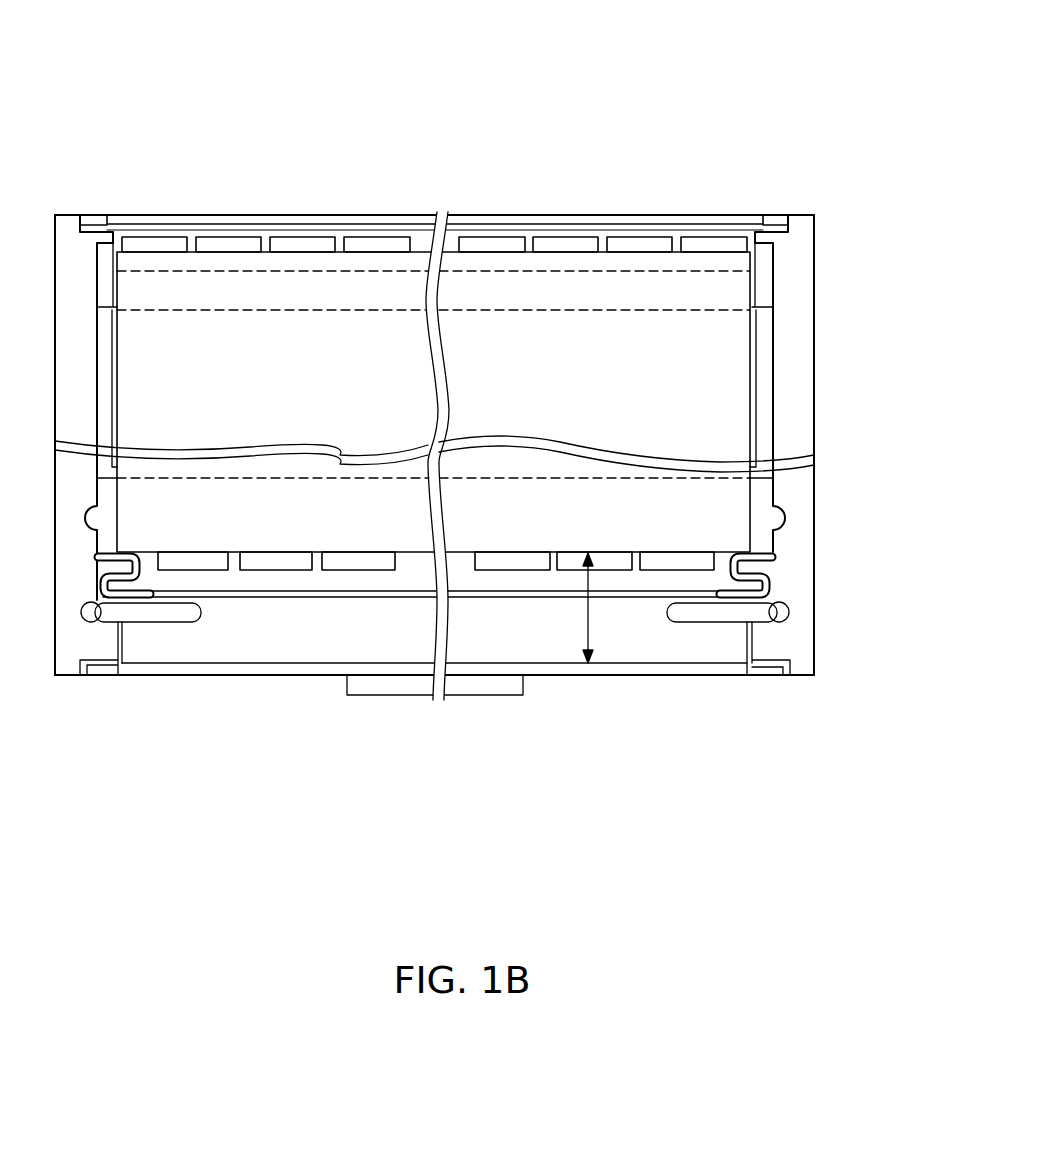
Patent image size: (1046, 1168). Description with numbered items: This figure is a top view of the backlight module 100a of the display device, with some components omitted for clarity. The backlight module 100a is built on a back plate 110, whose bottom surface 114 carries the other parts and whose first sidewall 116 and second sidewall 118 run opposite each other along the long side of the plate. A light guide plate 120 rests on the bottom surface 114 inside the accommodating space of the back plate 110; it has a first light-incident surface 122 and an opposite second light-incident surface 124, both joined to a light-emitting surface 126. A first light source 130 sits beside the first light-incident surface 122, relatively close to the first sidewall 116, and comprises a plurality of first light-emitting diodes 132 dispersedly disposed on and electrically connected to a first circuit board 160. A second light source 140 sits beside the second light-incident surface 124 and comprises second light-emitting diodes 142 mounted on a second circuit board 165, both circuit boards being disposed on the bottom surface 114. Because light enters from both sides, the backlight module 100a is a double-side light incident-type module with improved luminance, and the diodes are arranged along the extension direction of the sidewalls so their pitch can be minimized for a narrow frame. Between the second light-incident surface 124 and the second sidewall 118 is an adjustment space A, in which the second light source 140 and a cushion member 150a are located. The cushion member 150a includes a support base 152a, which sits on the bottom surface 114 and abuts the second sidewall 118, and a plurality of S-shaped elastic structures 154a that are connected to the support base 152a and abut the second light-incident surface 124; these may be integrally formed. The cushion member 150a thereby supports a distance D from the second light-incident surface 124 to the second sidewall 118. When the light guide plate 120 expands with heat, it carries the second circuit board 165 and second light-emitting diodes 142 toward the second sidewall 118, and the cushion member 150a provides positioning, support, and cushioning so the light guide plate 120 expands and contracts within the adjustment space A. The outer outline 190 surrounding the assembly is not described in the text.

The backlight module 100a is at (818, 832).
The back plate 110 is at (501, 485).
The bottom surface 114 is at (780, 606).
The first sidewall 116 is at (690, 225).
The second sidewall 118 is at (588, 668).
The light guide plate 120 is at (728, 430).
The first light-incident surface 122 is at (604, 243).
The second light-incident surface 124 is at (513, 553).
The light-emitting surface 126 is at (725, 378).
The first light source 130 is at (266, 128).
The first light-emitting diodes 132 is at (160, 245).
The second light source 140 is at (261, 680).
The second light-emitting diodes 142 is at (186, 565).
The cushion member 150a is at (419, 680).
The support base 152a is at (655, 642).
The elastic structures 154a is at (103, 586).
The first circuit board 160 is at (347, 230).
The second circuit board 165 is at (358, 582).
The outer frame 190 is at (800, 318).
The adjustment space A is at (650, 582).
The distance D is at (593, 608).